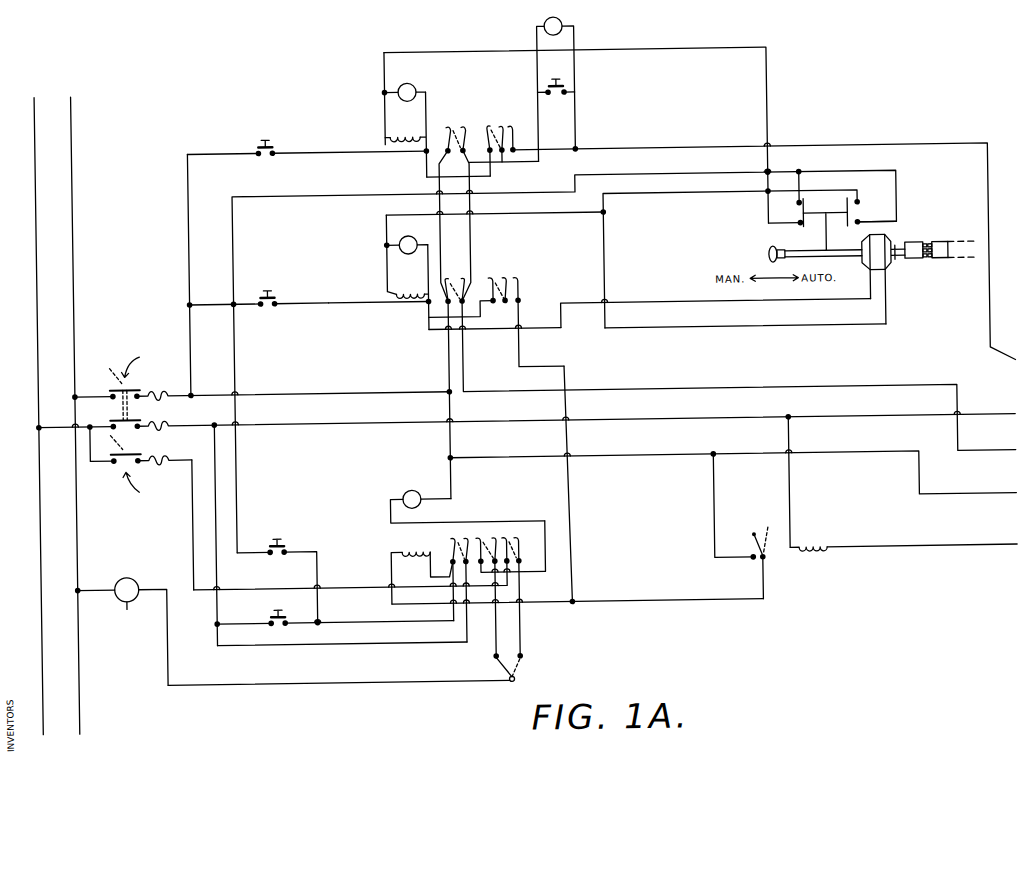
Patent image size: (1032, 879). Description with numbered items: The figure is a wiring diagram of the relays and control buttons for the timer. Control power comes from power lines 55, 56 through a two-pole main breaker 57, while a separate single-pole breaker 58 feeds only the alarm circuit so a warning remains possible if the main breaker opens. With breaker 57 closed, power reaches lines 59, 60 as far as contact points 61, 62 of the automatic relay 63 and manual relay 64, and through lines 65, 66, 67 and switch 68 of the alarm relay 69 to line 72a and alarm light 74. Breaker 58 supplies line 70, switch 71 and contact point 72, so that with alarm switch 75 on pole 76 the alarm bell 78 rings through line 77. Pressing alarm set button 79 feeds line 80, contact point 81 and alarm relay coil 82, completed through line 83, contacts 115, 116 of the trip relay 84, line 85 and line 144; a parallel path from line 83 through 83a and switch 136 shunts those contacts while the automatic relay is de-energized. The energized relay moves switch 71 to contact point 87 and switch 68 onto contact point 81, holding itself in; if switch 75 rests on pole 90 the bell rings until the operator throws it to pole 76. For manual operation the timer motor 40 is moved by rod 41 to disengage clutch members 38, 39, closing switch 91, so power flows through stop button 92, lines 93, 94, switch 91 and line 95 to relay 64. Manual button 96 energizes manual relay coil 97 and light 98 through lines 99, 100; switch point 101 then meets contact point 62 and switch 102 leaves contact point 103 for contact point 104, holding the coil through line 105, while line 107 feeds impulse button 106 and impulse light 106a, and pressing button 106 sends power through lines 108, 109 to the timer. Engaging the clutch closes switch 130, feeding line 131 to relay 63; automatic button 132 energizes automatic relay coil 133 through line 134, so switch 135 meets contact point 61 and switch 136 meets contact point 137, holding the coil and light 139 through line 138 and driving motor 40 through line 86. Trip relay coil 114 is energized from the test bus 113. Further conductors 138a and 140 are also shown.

The clutch member 38 is at (951, 234).
The clutch member 39 is at (920, 234).
The synchronous motor 40 is at (890, 279).
The rod 41 is at (803, 237).
The power line 55 is at (21, 416).
The power line 56 is at (93, 415).
The main circuit breaker 57 is at (134, 393).
The alarm circuit breaker 58 is at (141, 458).
The line 59 is at (261, 394).
The line 60 is at (440, 400).
The contact point 61 is at (450, 312).
The contact point 62 is at (448, 201).
The automatic relay 63 is at (478, 271).
The manual relay 64 is at (382, 115).
The line 65 is at (526, 422).
The line 66 is at (229, 535).
The line 67 is at (343, 657).
The switch 68 is at (462, 581).
The alarm relay 69 is at (398, 573).
The line 70 is at (182, 525).
The switch 71 is at (356, 555).
The contact point 72 is at (528, 588).
The contact point 72a is at (550, 556).
The alarm light 74 is at (467, 496).
The alarm switch 75 is at (508, 656).
The pole 76 is at (538, 662).
The line 77 is at (339, 695).
The alarm bell 78 is at (122, 626).
The alarm set button 79 is at (267, 617).
The line 80 is at (385, 609).
The contact point 81 is at (448, 573).
The alarm relay coil 82 is at (414, 540).
The line 83 is at (578, 591).
The line 83a is at (588, 484).
The trip relay 84 is at (812, 516).
The line 85 is at (720, 504).
The line 86 is at (760, 333).
The contact point 87 is at (511, 547).
The pole 90 is at (476, 619).
The switch 91 is at (785, 213).
The stop button 92 is at (279, 576).
The line 93 is at (565, 352).
The line 94 is at (817, 178).
The line 95 is at (592, 138).
The manual push button 96 is at (257, 148).
The manual relay coil 97 is at (370, 156).
The light 98 is at (403, 84).
The line 99 is at (306, 163).
The line 100 is at (172, 276).
The switch point 101 is at (468, 200).
The switch point 102 is at (539, 126).
The contact point 103 is at (519, 139).
The contact point 104 is at (491, 138).
The line 105 is at (440, 167).
The impulse button 106 is at (582, 77).
The impulse light 106a is at (577, 84).
The line 107 is at (519, 138).
The line 108 is at (593, 120).
The line 109 is at (793, 252).
The test bus 113 is at (922, 535).
The trip relay coil 114 is at (814, 483).
The contact 115 is at (741, 539).
The contact 116 is at (774, 556).
The switch 130 is at (871, 209).
The line 131 is at (729, 259).
The automatic push button 132 is at (257, 298).
The automatic relay coil 133 is at (400, 308).
The line 134 is at (379, 313).
The switch 135 is at (457, 278).
The switch 136 is at (537, 309).
The contact point 137 is at (491, 278).
The line 138 is at (716, 323).
The conductor 138a is at (472, 339).
The light 139 is at (406, 236).
The conductor 140 is at (739, 375).
The line 144 is at (733, 465).